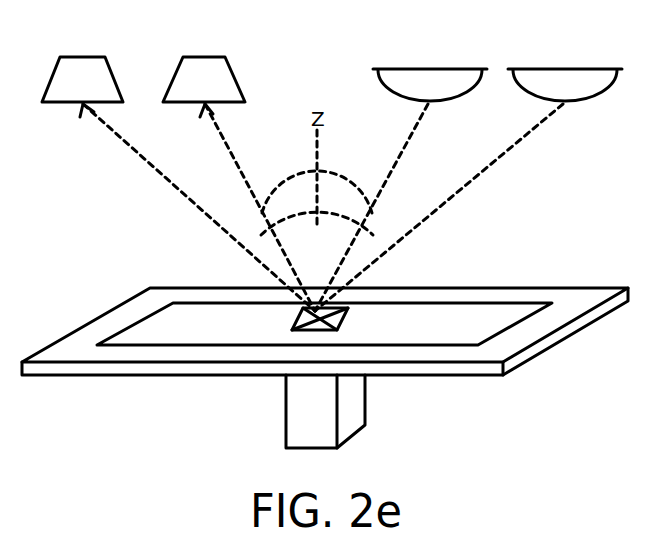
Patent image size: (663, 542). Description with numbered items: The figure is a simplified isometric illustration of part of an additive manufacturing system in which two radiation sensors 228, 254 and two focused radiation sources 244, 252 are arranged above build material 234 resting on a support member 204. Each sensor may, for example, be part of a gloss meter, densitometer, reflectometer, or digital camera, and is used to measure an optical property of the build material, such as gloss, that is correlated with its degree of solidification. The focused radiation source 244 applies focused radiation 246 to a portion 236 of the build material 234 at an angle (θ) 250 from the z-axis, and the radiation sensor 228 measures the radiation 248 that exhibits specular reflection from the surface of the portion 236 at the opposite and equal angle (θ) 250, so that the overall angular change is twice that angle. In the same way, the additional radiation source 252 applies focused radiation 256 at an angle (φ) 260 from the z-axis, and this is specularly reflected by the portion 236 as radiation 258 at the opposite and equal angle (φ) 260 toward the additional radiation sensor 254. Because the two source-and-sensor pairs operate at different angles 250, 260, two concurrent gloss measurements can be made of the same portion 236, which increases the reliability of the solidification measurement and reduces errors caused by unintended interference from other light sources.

The support member 204 is at (455, 287).
The build material 234 is at (185, 304).
The portion of the build material 236 is at (334, 321).
The radiation sensor 254 is at (97, 56).
The radiation sensor 228 is at (218, 56).
The focused radiation source 244 is at (408, 68).
The radiation source 252 is at (542, 68).
The radiation 258 is at (118, 136).
The radiation 248 is at (213, 122).
The focused radiation 246 is at (428, 112).
The focused radiation 256 is at (533, 128).
The angle (θ) 250 is at (302, 171).
The angle (φ) 260 is at (265, 238).